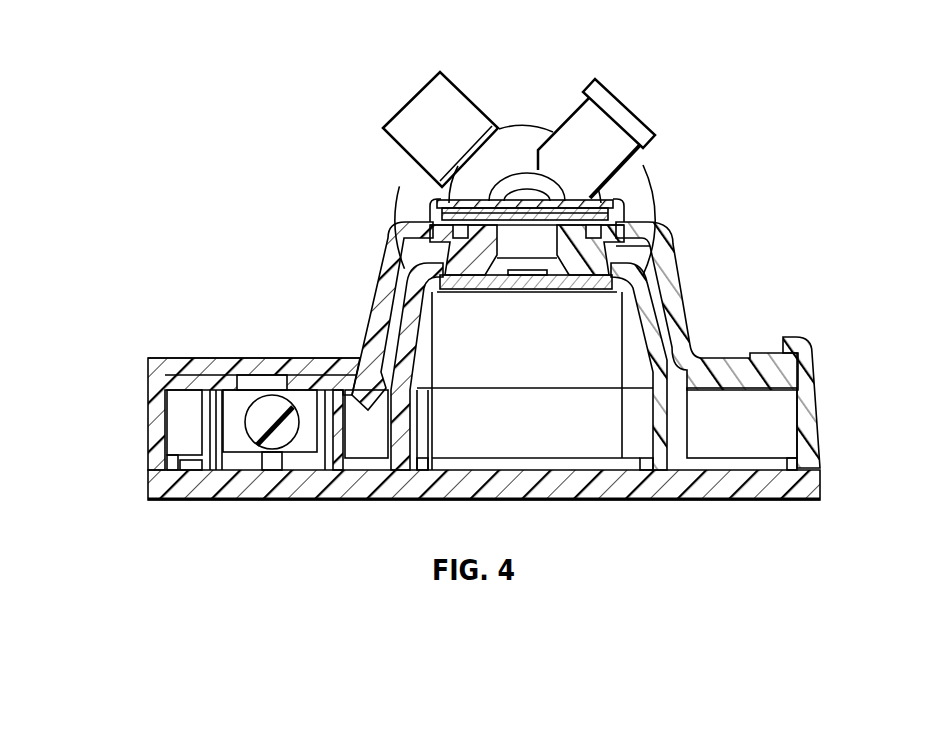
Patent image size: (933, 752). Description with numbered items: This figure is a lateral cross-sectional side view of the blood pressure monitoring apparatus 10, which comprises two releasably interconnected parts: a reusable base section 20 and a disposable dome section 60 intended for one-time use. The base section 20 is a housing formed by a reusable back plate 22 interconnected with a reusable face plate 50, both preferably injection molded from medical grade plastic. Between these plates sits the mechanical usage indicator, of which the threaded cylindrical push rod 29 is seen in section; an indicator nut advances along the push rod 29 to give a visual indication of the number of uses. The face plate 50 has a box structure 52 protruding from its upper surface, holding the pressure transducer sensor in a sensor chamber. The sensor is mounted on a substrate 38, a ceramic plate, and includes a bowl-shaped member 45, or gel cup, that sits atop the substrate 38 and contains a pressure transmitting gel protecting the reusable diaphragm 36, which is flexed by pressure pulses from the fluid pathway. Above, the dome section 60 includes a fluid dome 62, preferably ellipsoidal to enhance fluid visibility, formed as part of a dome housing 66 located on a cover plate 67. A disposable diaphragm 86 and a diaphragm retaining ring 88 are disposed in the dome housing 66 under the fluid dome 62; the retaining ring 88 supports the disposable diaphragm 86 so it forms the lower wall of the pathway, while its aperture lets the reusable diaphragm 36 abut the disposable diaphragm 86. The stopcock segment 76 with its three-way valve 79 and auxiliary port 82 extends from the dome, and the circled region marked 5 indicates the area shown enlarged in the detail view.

The blood pressure monitoring apparatus 10 is at (489, 292).
The reusable base section 20 is at (224, 419).
The reusable back plate 22 is at (806, 500).
The threaded cylindrical push rod 29 is at (266, 432).
The reusable diaphragm 36 is at (612, 205).
The substrate 38 is at (480, 289).
The bowl-shaped member 45 is at (580, 275).
The reusable face plate 50 is at (820, 413).
The box structure 52 is at (415, 330).
The disposable dome section 60 is at (707, 304).
The fluid dome 62 is at (615, 178).
The dome housing 66 is at (372, 314).
The cover plate 67 is at (236, 356).
The stopcock segment 76 is at (565, 127).
The three-way valve 79 is at (510, 148).
The auxiliary port 82 is at (620, 95).
The disposable diaphragm 86 is at (612, 217).
The diaphragm retaining ring 88 is at (660, 238).
The detail view indicator 5 is at (490, 195).